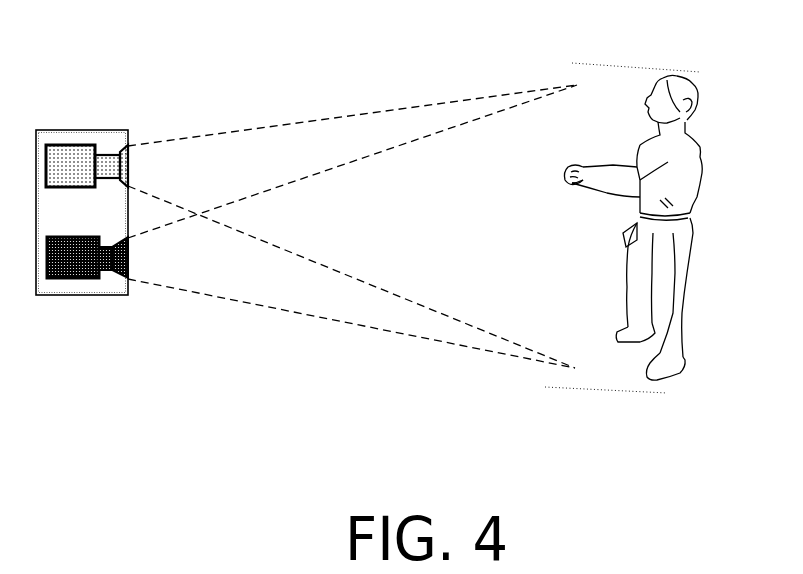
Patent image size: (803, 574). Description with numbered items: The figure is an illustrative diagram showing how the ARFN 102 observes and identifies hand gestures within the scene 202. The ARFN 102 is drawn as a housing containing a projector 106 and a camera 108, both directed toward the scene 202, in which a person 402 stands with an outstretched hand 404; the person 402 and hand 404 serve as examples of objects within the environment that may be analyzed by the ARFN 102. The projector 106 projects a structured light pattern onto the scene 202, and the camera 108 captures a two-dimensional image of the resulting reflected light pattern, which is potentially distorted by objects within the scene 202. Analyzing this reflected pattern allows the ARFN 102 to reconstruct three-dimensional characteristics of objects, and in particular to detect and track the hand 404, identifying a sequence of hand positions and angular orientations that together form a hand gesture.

The augmented reality functional node 102 is at (60, 282).
The projector 106 is at (70, 165).
The camera 108 is at (88, 282).
The scene 202 is at (514, 49).
The person 402 is at (683, 143).
The hand 404 is at (567, 172).